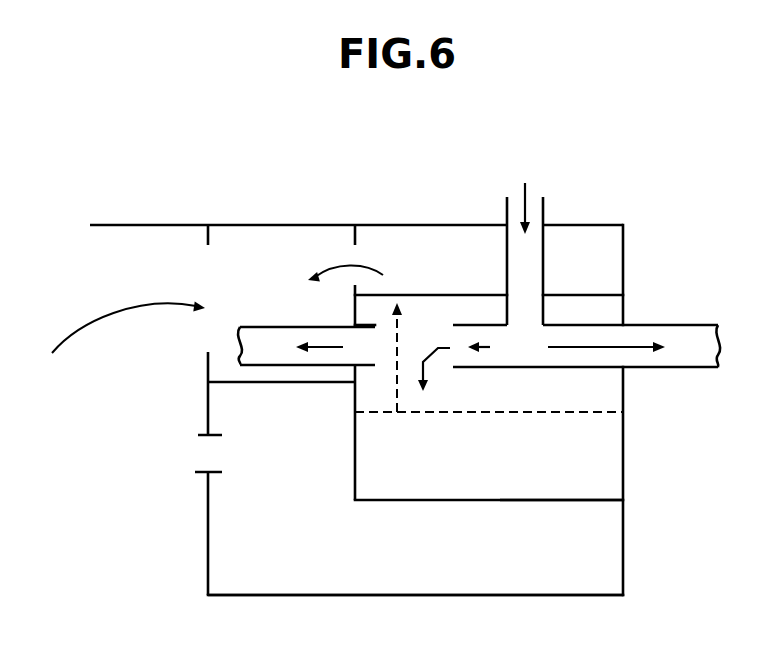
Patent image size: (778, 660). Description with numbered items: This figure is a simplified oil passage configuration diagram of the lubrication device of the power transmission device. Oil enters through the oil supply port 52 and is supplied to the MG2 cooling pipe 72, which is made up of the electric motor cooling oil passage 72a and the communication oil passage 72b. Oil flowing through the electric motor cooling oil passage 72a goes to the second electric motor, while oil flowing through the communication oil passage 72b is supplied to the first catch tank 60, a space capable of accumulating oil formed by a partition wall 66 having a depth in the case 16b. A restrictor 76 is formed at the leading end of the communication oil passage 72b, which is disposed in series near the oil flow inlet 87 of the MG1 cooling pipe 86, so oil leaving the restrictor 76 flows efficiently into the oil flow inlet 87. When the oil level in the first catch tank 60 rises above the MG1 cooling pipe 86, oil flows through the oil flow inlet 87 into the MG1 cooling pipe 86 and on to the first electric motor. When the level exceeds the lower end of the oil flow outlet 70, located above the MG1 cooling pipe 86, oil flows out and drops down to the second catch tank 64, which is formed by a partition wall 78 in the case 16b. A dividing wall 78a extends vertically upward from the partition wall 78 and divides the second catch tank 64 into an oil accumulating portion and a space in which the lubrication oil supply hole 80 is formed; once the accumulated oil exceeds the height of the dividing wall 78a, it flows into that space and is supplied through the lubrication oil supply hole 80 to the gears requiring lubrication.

The case 16b is at (225, 224).
The oil supply port 52 is at (544, 210).
The first catch tank 60 is at (600, 470).
The second catch tank 64 is at (534, 570).
The partition wall 66 is at (598, 500).
The oil flow outlet 70 is at (356, 242).
The MG2 cooling pipe 72 is at (570, 310).
The electric motor cooling oil passage 72a is at (675, 325).
The communication oil passage 72b is at (478, 325).
The restrictor 76 is at (450, 337).
The partition wall 78 is at (373, 595).
The dividing wall 78a is at (207, 575).
The lubrication oil supply hole 80 is at (200, 472).
The MG1 cooling pipe 86 is at (283, 326).
The oil flow inlet 87 is at (372, 348).